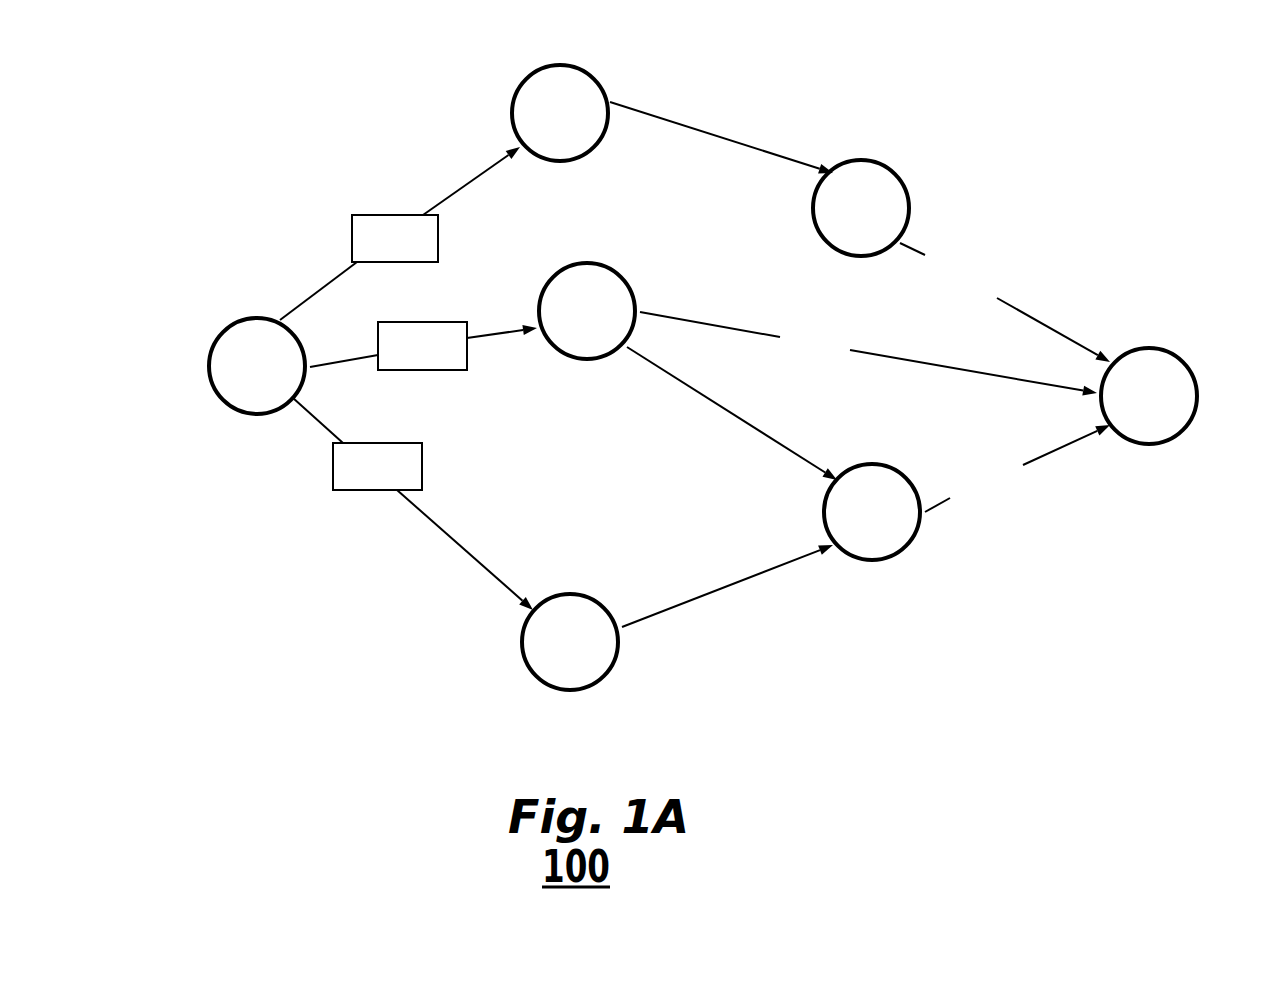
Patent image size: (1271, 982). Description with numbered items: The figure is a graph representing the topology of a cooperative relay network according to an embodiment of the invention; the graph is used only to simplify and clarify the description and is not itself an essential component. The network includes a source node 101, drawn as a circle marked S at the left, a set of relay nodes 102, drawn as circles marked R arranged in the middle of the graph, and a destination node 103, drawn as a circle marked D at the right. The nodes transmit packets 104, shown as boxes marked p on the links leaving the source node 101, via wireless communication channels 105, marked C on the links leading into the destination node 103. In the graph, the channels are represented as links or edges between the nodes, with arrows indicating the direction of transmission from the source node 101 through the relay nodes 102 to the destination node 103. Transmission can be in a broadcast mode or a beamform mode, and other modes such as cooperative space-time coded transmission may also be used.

The source node 101 is at (250, 318).
The relay nodes 102 is at (525, 82).
The destination node 103 is at (1155, 350).
The packets 104 is at (380, 215).
The wireless communication channels 105 is at (795, 335).